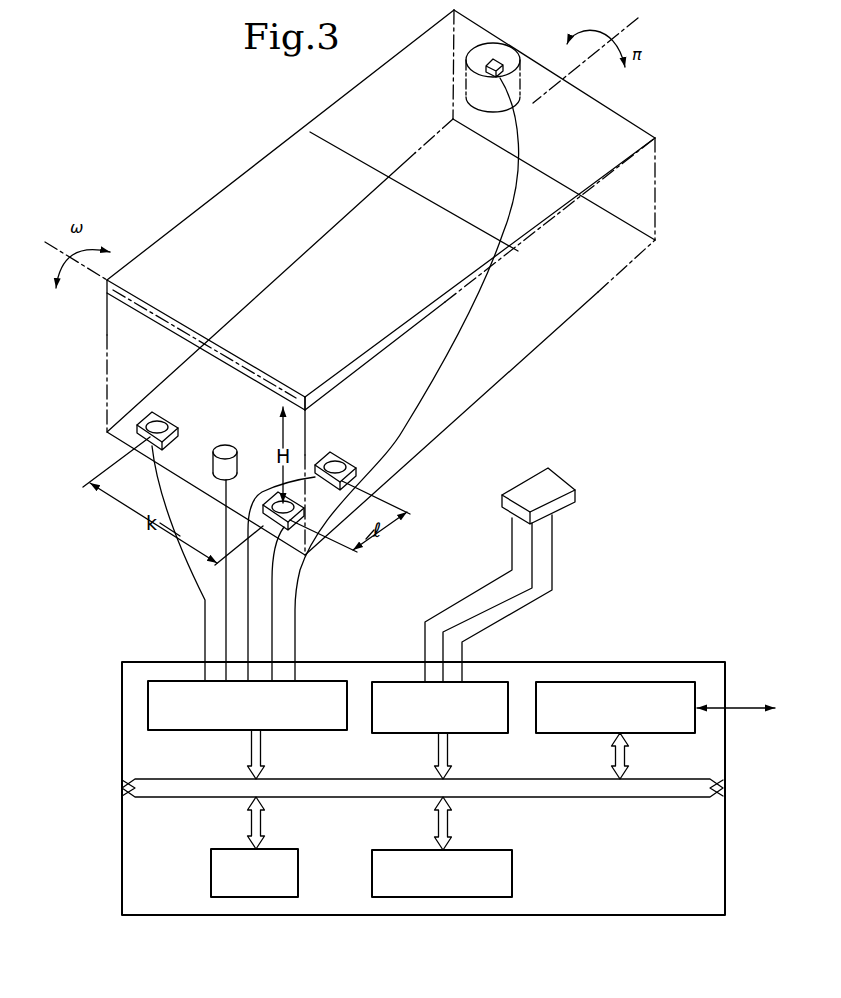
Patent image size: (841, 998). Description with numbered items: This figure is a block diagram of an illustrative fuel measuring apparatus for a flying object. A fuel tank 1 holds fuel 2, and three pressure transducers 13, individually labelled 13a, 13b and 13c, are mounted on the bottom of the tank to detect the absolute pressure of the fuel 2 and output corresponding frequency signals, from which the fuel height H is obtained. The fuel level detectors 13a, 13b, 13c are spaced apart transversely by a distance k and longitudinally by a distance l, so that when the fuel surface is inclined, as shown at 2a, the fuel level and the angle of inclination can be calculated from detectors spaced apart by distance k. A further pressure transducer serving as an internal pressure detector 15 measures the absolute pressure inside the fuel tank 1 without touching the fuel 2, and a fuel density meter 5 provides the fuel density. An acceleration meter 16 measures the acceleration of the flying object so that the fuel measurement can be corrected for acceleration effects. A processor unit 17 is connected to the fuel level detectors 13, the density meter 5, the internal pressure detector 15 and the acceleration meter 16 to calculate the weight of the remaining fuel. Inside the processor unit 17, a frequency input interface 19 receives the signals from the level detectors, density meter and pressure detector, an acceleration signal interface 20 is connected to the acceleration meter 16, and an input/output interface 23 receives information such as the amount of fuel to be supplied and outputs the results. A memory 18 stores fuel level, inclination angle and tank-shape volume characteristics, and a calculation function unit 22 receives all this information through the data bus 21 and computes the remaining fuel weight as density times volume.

The fuel tank 1 is at (247, 172).
The fuel 2 is at (634, 131).
The inclined fuel surface 2a is at (388, 352).
The fuel density meter 5 is at (233, 469).
The pressure transducers 13 is at (187, 433).
The first pressure transducer 13a is at (263, 490).
The second pressure transducer 13b is at (322, 465).
The third pressure transducer 13c is at (163, 437).
The internal pressure detector 15 is at (501, 58).
The acceleration meter 16 is at (575, 490).
The processor unit 17 is at (560, 663).
The memory 18 is at (237, 898).
The frequency input interface 19 is at (148, 698).
The acceleration signal interface 20 is at (492, 682).
The data bus 21 is at (127, 800).
The calculation function unit 22 is at (387, 898).
The input/output interface 23 is at (627, 681).